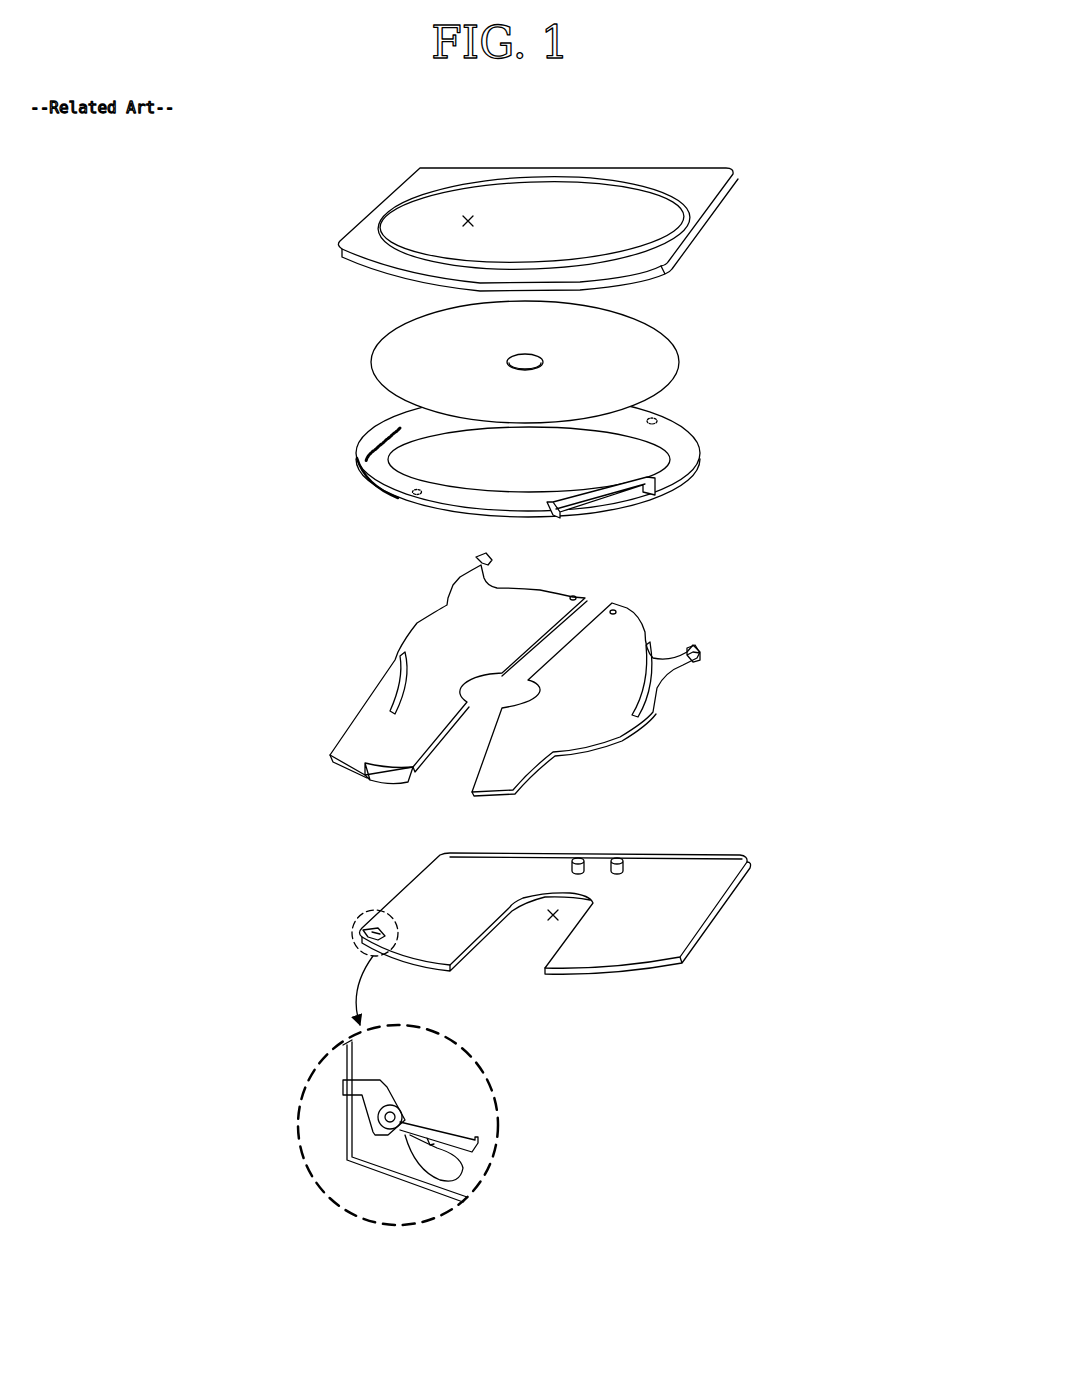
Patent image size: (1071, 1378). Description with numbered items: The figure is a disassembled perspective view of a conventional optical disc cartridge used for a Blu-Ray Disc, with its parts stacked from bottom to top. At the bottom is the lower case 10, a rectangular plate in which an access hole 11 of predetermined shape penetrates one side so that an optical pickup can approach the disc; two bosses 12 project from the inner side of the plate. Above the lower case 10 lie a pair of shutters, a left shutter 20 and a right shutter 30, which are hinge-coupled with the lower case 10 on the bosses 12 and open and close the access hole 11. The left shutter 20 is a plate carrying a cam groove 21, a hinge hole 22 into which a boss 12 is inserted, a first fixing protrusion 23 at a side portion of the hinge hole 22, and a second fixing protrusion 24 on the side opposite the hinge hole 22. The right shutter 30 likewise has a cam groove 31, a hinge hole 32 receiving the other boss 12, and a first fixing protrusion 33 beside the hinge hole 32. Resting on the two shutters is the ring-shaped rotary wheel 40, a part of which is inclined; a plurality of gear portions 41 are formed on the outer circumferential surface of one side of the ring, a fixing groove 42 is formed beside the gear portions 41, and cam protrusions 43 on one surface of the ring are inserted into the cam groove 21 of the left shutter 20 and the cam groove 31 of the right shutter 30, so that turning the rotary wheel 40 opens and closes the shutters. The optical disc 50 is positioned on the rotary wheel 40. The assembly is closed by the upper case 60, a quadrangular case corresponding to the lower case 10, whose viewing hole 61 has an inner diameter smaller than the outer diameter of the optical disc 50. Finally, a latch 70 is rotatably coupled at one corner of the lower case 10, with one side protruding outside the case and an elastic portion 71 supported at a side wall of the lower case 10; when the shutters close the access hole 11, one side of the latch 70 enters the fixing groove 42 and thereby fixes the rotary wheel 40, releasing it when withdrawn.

The lower case 10 is at (733, 913).
The access hole 11 is at (558, 920).
The bosses 12 is at (618, 858).
The left shutter 20 is at (428, 607).
The cam groove 21 is at (398, 662).
The hinge hole 22 is at (574, 595).
The first fixing protrusion 23 is at (477, 556).
The second fixing protrusion 24 is at (380, 767).
The right shutter 30 is at (655, 727).
The cam groove 31 is at (676, 682).
The hinge hole 32 is at (615, 610).
The first fixing protrusion 33 is at (692, 645).
The rotary wheel 40 is at (708, 457).
The gear portions 41 is at (358, 440).
The fixing groove 42 is at (378, 488).
The cam protrusions 43 is at (660, 422).
The optical disc 50 is at (688, 362).
The upper case 60 is at (708, 233).
The viewing hole 61 is at (468, 214).
The latch 70 is at (340, 937).
The elastic portion 71 is at (478, 1170).